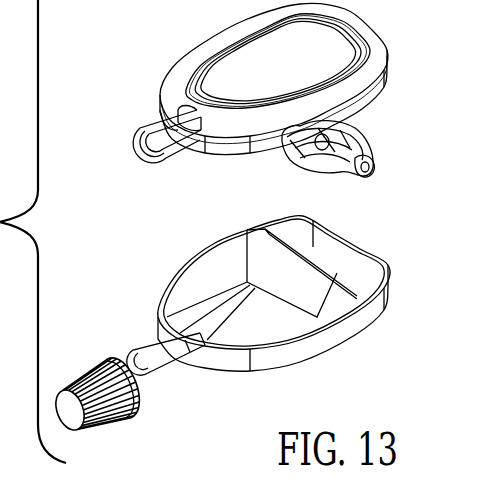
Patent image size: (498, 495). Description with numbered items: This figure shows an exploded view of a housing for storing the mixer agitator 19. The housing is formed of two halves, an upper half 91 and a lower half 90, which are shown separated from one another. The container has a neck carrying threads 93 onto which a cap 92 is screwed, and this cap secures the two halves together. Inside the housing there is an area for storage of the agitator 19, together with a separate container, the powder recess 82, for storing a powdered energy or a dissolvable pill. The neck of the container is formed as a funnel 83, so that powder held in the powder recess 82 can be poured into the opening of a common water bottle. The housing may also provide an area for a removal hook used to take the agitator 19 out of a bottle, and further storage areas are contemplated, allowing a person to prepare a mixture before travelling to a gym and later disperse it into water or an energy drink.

The agitator 19 is at (376, 127).
The powder recess 82 is at (281, 330).
The funnel 83 is at (173, 358).
The lower half 90 is at (350, 347).
The upper half 91 is at (193, 48).
The cap 92 is at (112, 420).
The threads 93 is at (147, 120).